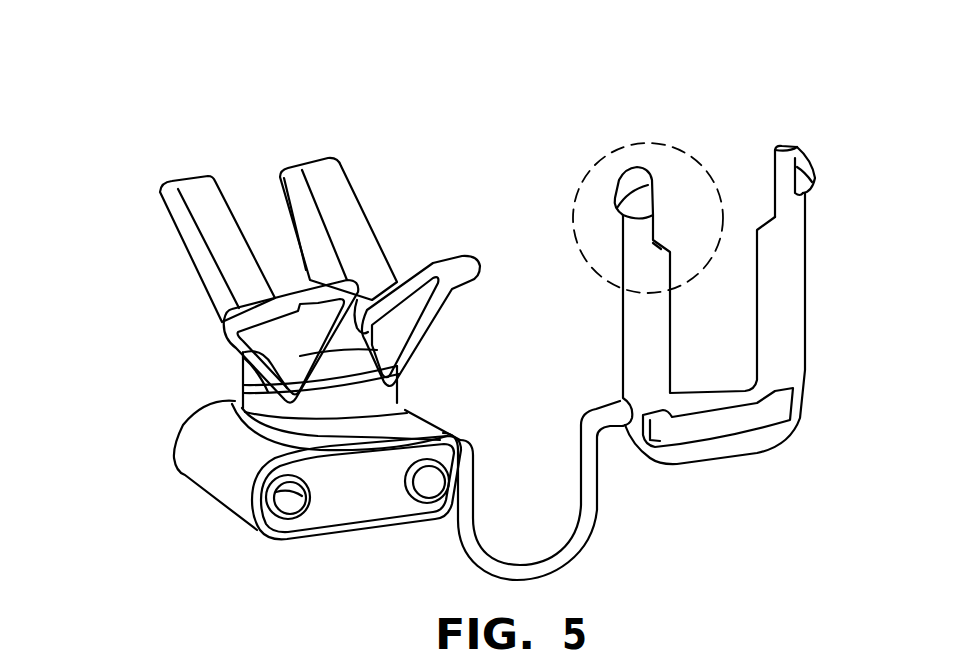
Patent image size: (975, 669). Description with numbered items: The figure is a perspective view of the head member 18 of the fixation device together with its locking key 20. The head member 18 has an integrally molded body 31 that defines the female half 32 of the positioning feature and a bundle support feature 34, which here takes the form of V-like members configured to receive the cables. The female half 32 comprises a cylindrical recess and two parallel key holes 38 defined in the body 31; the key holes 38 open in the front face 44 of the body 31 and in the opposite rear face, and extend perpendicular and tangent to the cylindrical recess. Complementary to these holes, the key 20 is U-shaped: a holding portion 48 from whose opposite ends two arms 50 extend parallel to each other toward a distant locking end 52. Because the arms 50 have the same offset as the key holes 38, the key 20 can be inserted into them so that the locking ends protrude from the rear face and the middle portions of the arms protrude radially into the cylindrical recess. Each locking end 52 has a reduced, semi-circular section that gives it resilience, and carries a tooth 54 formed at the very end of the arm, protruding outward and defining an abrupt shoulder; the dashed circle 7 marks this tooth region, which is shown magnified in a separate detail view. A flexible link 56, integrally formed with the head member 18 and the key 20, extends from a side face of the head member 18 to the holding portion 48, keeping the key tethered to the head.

The detail view circle for FIG. 7 is at (607, 148).
The head member 18 is at (320, 219).
The key 20 is at (749, 267).
The body 31 is at (243, 390).
The female half of the positioning feature 32 is at (312, 524).
The bundle support feature 34 is at (367, 248).
The key holes 38 is at (287, 503).
The front face 44 is at (353, 513).
The holding portion 48 is at (732, 432).
The arms 50 is at (660, 302).
The locking ends 52 is at (657, 170).
The tooth 54 is at (617, 208).
The flexible link 56 is at (580, 527).